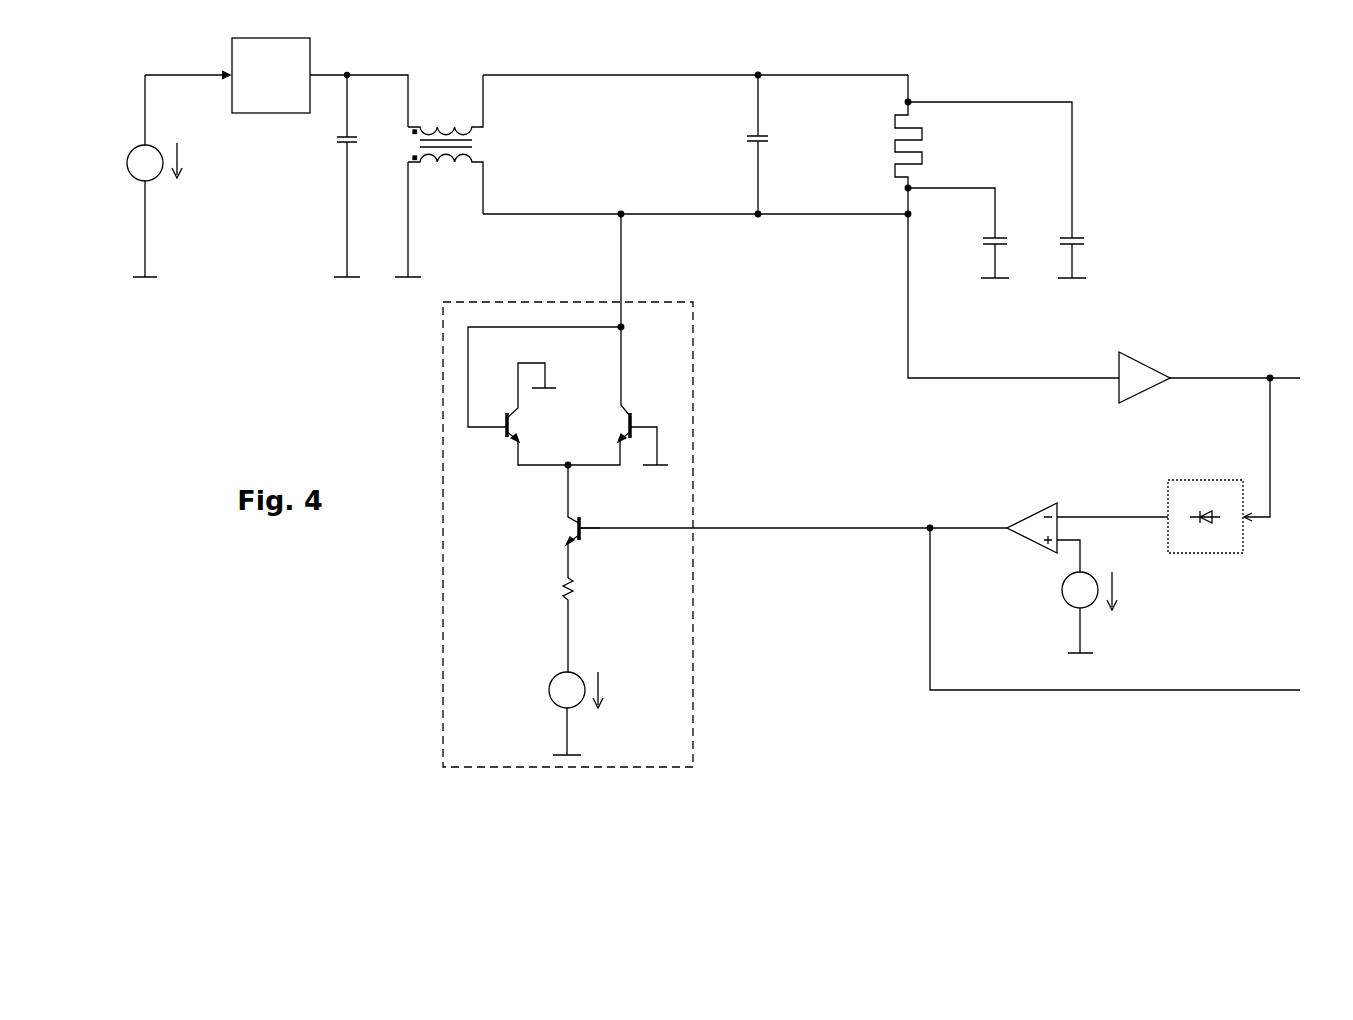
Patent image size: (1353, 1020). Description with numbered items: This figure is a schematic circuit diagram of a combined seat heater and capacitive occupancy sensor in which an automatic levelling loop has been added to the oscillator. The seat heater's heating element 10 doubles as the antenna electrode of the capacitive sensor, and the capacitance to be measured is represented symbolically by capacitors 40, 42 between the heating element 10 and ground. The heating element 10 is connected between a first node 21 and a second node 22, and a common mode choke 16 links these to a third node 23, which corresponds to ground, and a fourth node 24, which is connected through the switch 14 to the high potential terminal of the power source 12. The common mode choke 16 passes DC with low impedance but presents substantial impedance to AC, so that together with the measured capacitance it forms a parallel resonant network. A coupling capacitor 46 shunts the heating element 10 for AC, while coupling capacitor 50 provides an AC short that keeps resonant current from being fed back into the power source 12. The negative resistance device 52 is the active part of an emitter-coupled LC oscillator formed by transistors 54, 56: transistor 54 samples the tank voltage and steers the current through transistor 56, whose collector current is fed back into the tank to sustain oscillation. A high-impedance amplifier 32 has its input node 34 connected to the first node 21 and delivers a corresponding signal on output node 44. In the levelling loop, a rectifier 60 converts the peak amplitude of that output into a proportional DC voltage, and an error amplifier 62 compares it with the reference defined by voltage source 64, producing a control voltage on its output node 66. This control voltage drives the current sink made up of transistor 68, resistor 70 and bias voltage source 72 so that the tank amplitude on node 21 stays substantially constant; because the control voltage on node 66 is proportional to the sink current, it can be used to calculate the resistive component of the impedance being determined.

The heating element 10 is at (925, 135).
The power source 12 is at (155, 180).
The switch 14 is at (262, 113).
The common mode choke 16 is at (423, 175).
The first node 21 is at (643, 210).
The second node 22 is at (583, 76).
The third node 23 is at (408, 215).
The fourth node 24 is at (405, 120).
The high-impedance amplifier 32 is at (1147, 362).
The input node 34 is at (1093, 376).
The capacitor 40 is at (1005, 228).
The capacitor 42 is at (1058, 250).
The output node 44 is at (1190, 380).
The coupling capacitor 46 is at (766, 142).
The coupling capacitor 50 is at (338, 140).
The negative resistance device 52 is at (700, 330).
The transistor 54 is at (505, 412).
The transistor 56 is at (640, 409).
The rectifier 60 is at (1203, 555).
The error amplifier 62 is at (1043, 512).
The voltage source 64 is at (1063, 596).
The output node 66 is at (868, 523).
The transistor 68 is at (583, 540).
The resistor 70 is at (572, 595).
The bias voltage source 72 is at (548, 693).